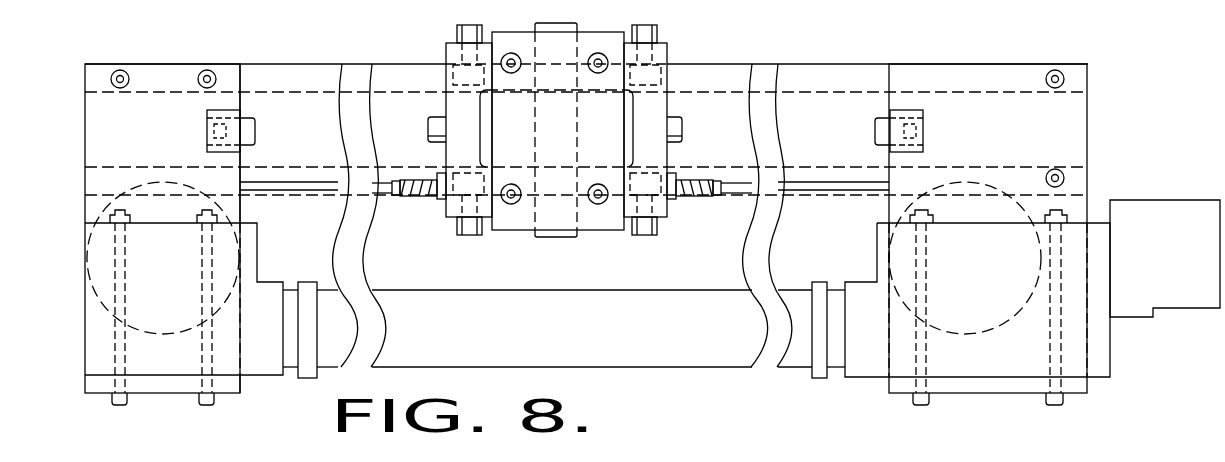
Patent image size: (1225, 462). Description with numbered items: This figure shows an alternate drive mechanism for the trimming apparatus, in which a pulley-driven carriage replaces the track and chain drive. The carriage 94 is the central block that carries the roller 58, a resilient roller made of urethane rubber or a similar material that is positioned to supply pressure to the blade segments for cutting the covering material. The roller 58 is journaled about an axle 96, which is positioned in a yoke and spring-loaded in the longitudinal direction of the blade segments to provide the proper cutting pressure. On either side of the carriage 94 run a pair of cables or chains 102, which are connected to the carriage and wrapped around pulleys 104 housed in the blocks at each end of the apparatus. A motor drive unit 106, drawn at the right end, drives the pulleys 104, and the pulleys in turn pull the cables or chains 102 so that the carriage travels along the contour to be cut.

The roller 58 is at (628, 110).
The carriage 94 is at (663, 48).
The axle 96 is at (575, 29).
The cables or chains 102 is at (283, 185).
The pulleys 104 is at (177, 335).
The motor drive unit 106 is at (1180, 267).